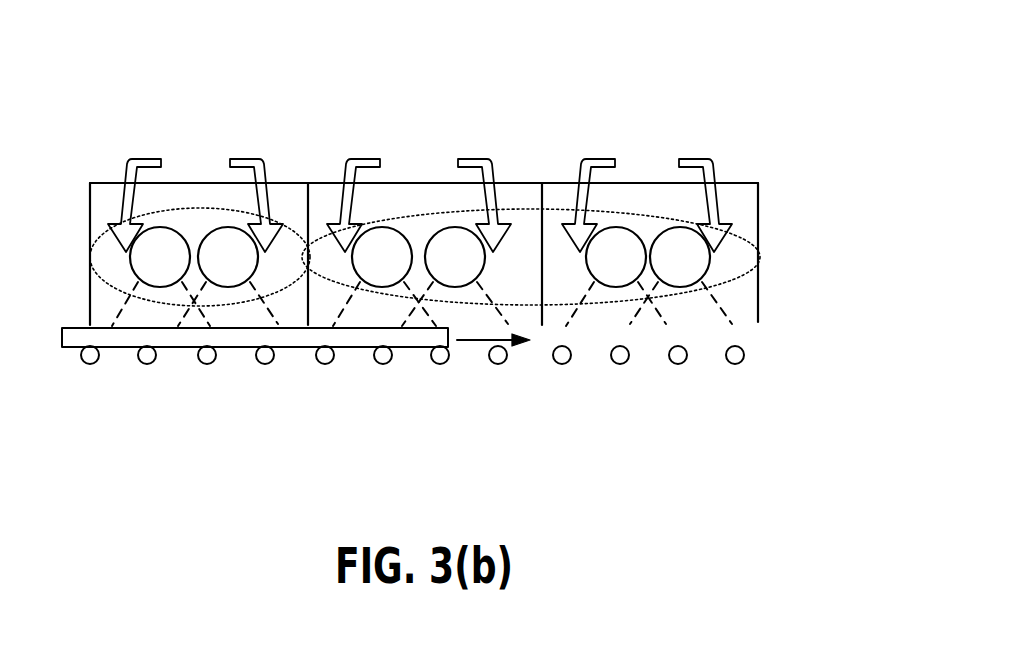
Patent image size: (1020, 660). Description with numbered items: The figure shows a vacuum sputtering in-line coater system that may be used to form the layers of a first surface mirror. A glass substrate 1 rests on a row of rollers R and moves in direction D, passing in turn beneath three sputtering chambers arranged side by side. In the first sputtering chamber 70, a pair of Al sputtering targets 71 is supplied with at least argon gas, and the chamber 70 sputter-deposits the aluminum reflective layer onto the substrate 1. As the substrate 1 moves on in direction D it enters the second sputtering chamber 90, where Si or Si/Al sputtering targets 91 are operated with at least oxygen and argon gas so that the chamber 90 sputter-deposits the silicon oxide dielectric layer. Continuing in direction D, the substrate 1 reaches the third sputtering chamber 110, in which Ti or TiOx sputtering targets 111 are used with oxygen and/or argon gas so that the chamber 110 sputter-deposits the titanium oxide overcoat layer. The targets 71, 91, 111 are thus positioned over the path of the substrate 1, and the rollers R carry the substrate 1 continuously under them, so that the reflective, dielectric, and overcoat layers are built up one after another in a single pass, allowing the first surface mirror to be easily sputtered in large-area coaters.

The sputtering chamber 70 is at (308, 95).
The Al sputtering targets 71 is at (160, 280).
The sputtering chamber 90 is at (523, 95).
The Si or Si/Al sputtering targets 91 is at (382, 280).
The sputtering chamber 110 is at (742, 95).
The Ti or TiOx sputtering targets 111 is at (605, 291).
The substrate 1 is at (227, 350).
The rollers R is at (147, 368).
The direction D is at (473, 342).